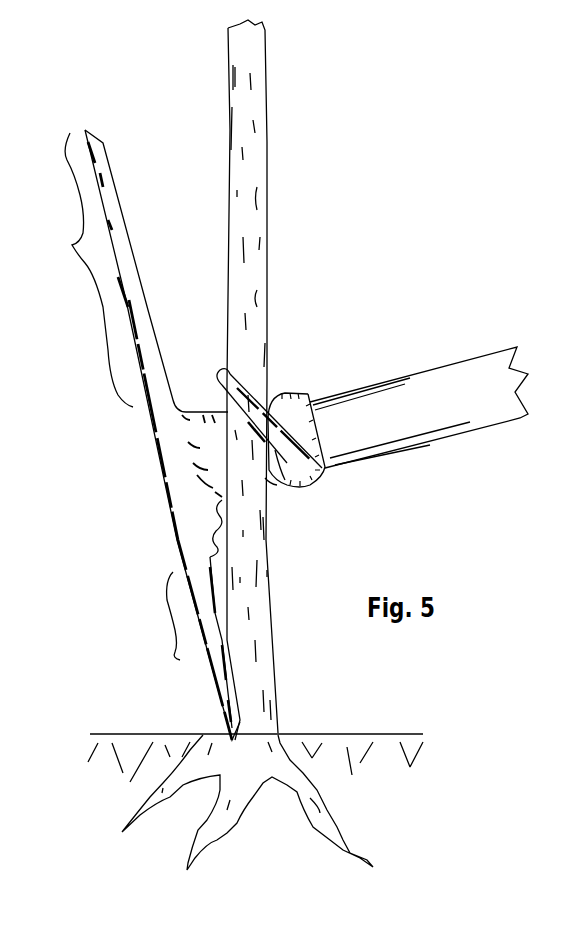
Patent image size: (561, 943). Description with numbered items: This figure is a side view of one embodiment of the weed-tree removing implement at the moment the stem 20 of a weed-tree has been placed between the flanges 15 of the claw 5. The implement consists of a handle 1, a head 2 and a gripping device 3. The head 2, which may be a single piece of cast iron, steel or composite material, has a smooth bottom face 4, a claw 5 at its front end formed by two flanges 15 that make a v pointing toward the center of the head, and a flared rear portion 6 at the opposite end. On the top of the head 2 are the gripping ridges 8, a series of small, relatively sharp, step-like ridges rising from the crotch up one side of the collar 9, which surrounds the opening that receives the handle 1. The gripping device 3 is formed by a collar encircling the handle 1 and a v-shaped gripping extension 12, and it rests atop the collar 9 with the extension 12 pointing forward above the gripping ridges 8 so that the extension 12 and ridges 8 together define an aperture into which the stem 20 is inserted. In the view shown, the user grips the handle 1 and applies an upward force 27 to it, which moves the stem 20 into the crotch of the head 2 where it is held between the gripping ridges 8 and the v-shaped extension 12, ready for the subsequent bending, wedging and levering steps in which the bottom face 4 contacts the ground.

The handle 1 is at (417, 372).
The head 2 is at (86, 376).
The gripping device 3 is at (325, 493).
The smooth bottom face 4 is at (160, 501).
The claw 5 is at (222, 728).
The flared rear portion 6 is at (73, 245).
The gripping ridges 8 is at (213, 530).
The collar 9 is at (252, 410).
The v-shaped gripping extension 12 is at (283, 455).
The flanges 15 is at (232, 740).
The stem 20 is at (268, 97).
The upward force 27 is at (482, 452).